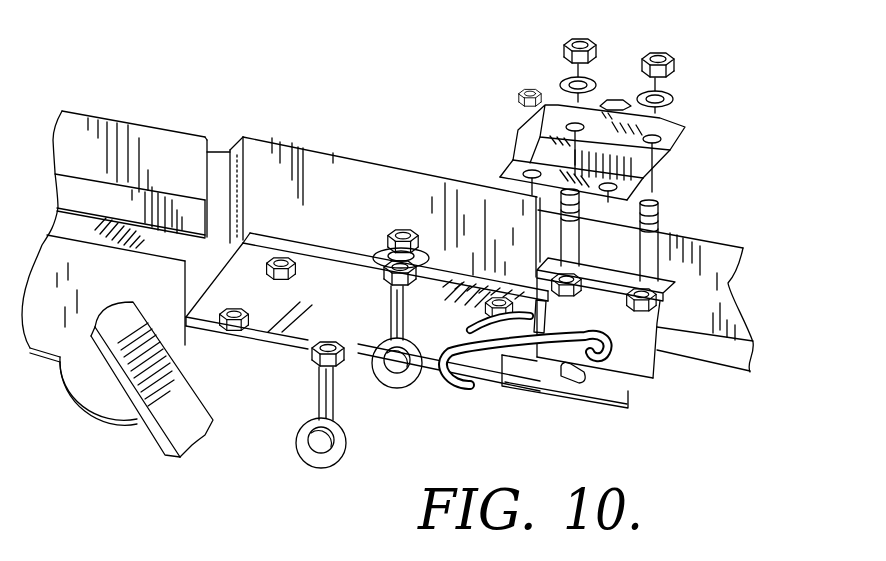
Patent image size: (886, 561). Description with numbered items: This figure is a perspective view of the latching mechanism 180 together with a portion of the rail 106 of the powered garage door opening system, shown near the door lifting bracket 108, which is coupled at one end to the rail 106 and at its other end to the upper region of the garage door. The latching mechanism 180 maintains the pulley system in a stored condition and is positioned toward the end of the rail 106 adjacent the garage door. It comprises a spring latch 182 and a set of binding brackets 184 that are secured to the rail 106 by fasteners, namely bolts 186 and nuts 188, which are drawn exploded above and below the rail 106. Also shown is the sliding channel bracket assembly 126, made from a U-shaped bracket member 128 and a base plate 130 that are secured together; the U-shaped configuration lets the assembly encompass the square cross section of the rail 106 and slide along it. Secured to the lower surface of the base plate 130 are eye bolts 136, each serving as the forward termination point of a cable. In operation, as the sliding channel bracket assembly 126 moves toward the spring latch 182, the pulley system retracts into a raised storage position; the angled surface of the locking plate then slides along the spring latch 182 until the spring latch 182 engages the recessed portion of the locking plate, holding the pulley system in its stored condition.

The rail 106 is at (735, 282).
The door lifting bracket 108 is at (163, 148).
The sliding channel bracket assembly 126 is at (360, 148).
The U-shaped bracket member 128 is at (390, 212).
The base plate 130 is at (371, 314).
The eye bolt 136 is at (388, 388).
The latching mechanism 180 is at (797, 202).
The spring latch 182 is at (522, 355).
The binding brackets 184 is at (683, 128).
The bolts 186 is at (656, 213).
The nuts 188 is at (655, 55).